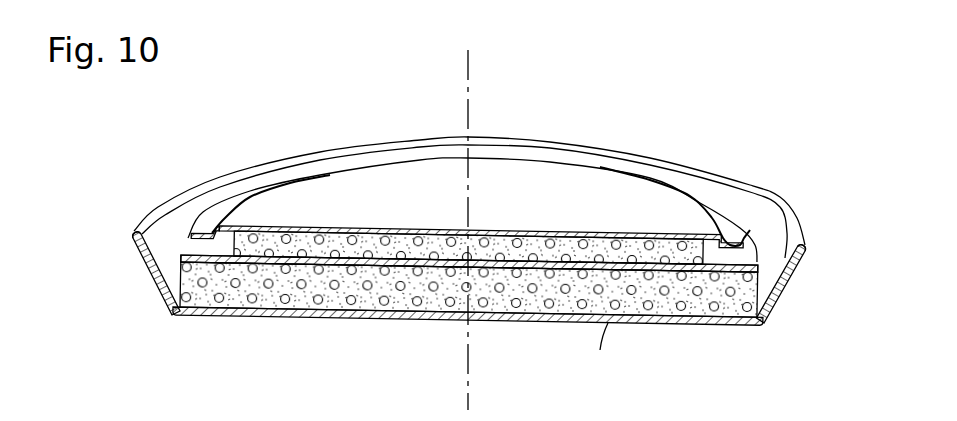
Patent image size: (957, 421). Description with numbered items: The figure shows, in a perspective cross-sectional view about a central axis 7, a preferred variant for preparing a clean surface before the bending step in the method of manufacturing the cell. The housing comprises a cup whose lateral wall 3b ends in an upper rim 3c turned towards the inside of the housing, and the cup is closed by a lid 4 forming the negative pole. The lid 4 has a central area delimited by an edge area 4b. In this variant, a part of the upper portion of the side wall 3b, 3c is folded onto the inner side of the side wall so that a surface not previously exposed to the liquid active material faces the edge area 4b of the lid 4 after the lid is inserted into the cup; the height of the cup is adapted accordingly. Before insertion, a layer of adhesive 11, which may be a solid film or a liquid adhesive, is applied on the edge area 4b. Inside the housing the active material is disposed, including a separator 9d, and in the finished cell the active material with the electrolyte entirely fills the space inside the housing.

The lateral wall 3b is at (783, 295).
The upper rim 3c is at (798, 259).
The lid 4 is at (590, 193).
The edge area 4b is at (738, 246).
The central axis 7 is at (468, 89).
The separator 9d is at (469, 263).
The layer of adhesive 11 is at (738, 235).